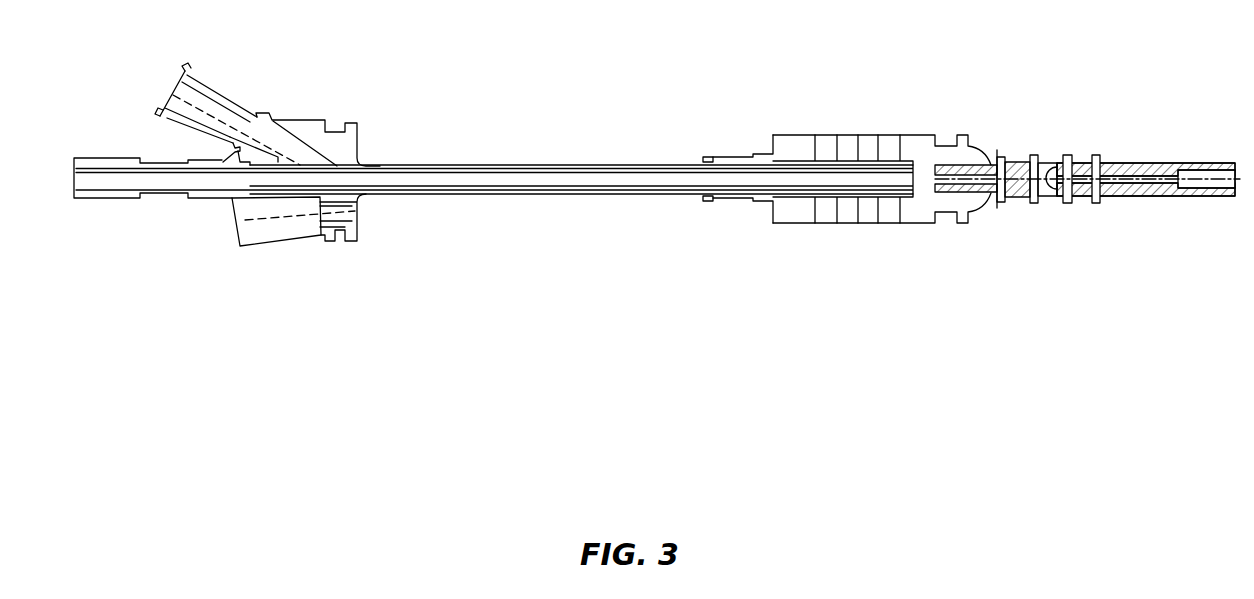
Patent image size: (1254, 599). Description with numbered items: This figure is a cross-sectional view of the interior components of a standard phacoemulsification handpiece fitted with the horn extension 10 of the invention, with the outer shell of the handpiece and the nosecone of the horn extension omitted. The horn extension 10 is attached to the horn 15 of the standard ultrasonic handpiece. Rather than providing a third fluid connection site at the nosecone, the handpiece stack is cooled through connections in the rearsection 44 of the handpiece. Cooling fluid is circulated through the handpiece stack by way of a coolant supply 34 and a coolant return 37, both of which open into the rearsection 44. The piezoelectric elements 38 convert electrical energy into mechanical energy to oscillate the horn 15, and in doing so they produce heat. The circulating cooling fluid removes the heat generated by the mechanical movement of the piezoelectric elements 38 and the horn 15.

The horn extension 10 is at (1023, 180).
The horn 15 is at (918, 150).
The coolant supply 34 is at (213, 113).
The coolant return 37 is at (172, 180).
The piezoelectric elements 38 is at (847, 208).
The rearsection 44 is at (340, 150).